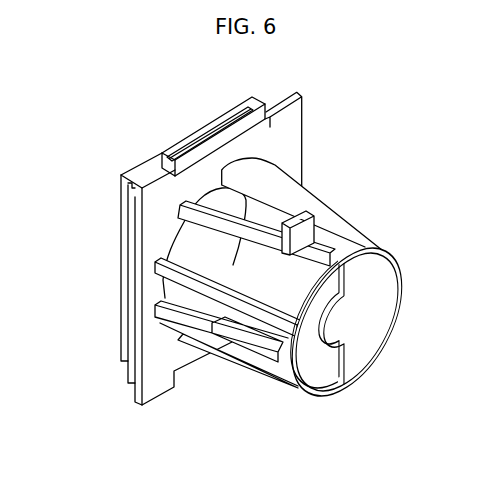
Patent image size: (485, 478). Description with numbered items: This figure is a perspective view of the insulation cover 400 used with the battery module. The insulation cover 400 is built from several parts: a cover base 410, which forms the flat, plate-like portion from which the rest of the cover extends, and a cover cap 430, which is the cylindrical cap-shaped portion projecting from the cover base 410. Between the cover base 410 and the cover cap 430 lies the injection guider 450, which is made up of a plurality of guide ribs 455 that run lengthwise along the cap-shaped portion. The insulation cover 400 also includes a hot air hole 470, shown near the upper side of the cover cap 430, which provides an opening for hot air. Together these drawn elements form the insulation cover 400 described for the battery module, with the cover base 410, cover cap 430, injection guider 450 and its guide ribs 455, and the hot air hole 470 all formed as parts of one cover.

The insulation cover 400 is at (243, 270).
The cover base 410 is at (121, 247).
The cover cap 430 is at (286, 305).
The injection guider 450 is at (253, 308).
The guide rib 455 is at (213, 295).
The hot air hole 470 is at (303, 247).